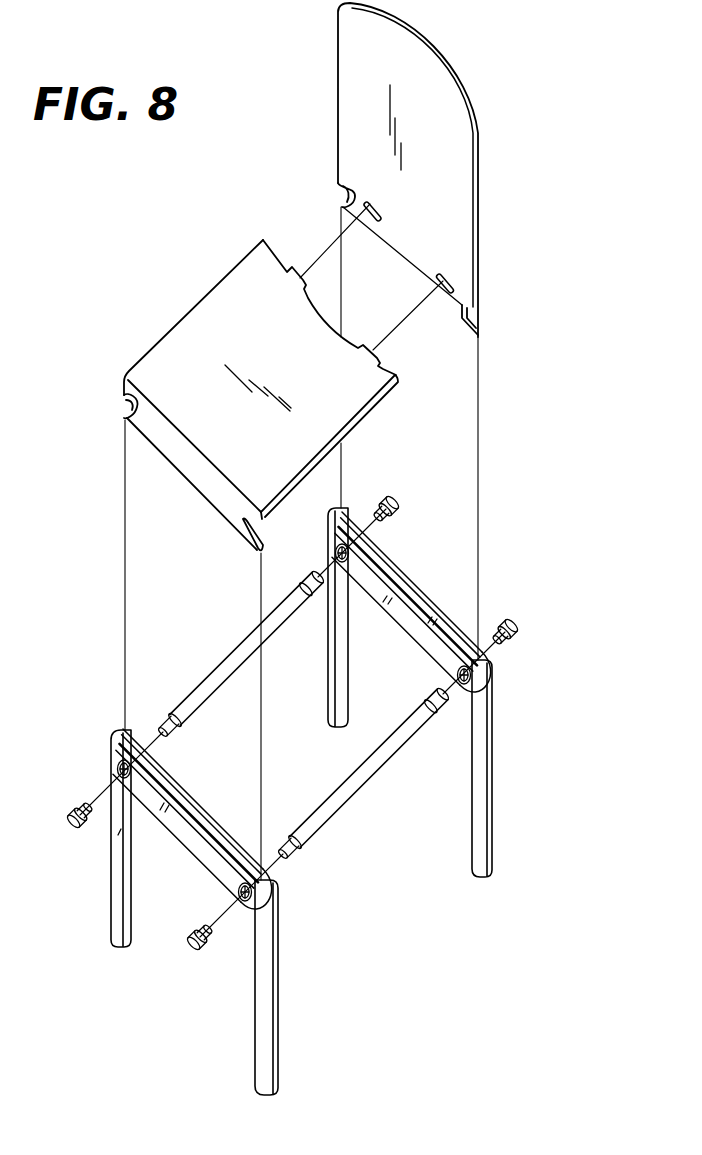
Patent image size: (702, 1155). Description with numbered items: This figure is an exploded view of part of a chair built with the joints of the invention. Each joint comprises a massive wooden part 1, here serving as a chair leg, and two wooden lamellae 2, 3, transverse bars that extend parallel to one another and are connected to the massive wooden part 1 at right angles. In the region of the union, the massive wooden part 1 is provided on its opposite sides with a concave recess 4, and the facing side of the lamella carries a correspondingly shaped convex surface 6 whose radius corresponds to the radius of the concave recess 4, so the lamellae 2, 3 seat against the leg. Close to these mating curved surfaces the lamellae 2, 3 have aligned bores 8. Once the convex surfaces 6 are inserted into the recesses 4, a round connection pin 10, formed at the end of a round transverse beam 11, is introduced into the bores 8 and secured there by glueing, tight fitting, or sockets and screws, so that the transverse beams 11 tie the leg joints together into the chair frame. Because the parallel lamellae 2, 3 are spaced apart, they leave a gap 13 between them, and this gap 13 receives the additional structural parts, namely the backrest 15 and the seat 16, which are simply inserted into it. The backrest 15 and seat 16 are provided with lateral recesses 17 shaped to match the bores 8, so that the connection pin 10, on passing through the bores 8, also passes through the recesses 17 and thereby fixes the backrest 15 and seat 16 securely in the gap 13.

The massive wooden part 1 is at (340, 668).
The lamella 2 is at (410, 617).
The lamella 3 is at (313, 727).
The concave recess 4 is at (284, 905).
The convex surface 6 is at (273, 923).
The bore 8 is at (120, 768).
The connection pin 10 is at (168, 716).
The transverse beam 11 is at (243, 650).
The gap 13 is at (413, 603).
The backrest 15 is at (347, 126).
The seat 16 is at (203, 318).
The lateral recess 17 is at (340, 188).